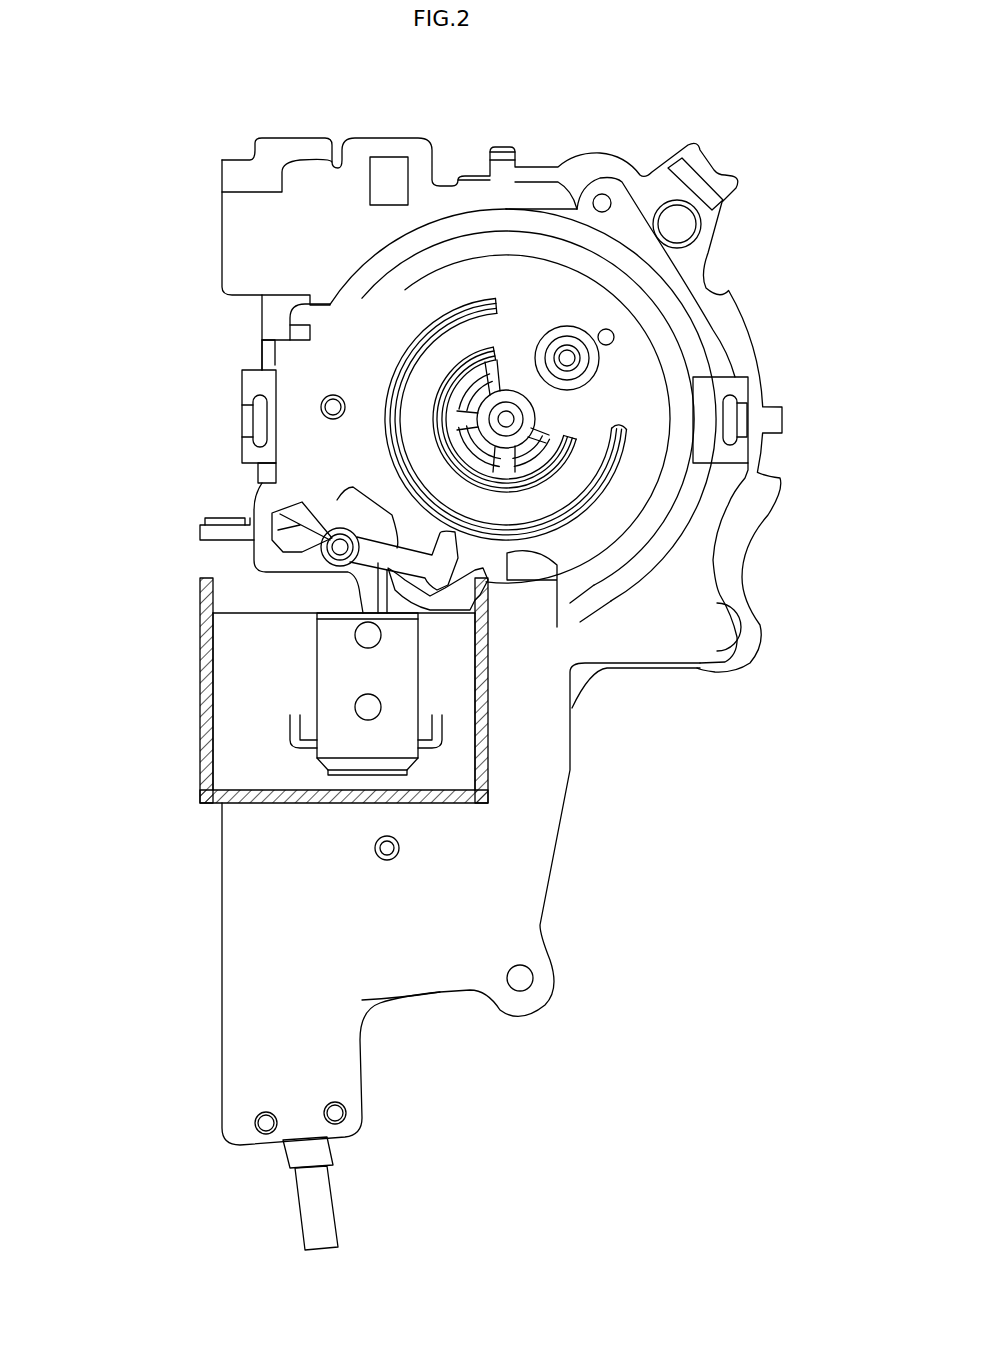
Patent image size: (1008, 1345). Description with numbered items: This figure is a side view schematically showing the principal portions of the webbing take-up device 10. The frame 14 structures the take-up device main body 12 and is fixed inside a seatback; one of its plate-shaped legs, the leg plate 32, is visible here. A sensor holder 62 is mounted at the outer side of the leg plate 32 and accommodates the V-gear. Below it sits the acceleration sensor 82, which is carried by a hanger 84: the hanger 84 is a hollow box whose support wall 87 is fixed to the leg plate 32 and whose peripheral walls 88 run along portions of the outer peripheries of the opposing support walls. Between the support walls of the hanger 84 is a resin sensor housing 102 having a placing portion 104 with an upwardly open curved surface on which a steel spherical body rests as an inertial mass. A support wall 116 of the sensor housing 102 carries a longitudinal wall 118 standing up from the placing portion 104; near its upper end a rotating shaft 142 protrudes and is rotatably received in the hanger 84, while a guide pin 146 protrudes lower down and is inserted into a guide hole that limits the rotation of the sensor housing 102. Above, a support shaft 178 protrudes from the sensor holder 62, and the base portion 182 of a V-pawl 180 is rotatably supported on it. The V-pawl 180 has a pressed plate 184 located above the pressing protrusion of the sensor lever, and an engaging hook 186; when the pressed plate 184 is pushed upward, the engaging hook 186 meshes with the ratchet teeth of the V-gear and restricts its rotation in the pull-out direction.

The webbing take-up device 10 is at (762, 142).
The take-up device main body 12 is at (193, 1028).
The frame 14 is at (455, 998).
The leg plate 32 is at (405, 997).
The sensor holder 62 is at (663, 313).
The acceleration sensor 82 is at (185, 603).
The hanger 84 is at (488, 730).
The support wall 87 is at (455, 776).
The peripheral walls 88 is at (252, 805).
The sensor housing 102 is at (253, 683).
The placing portion 104 is at (363, 775).
The support wall 116 is at (428, 658).
The longitudinal wall 118 is at (404, 692).
The rotating shaft 142 is at (355, 632).
The guide pin 146 is at (368, 707).
The support shaft 178 is at (300, 525).
The V-pawl 180 is at (316, 503).
The base portion 182 is at (340, 547).
The pressed plate 184 is at (427, 630).
The engaging hook 186 is at (560, 585).